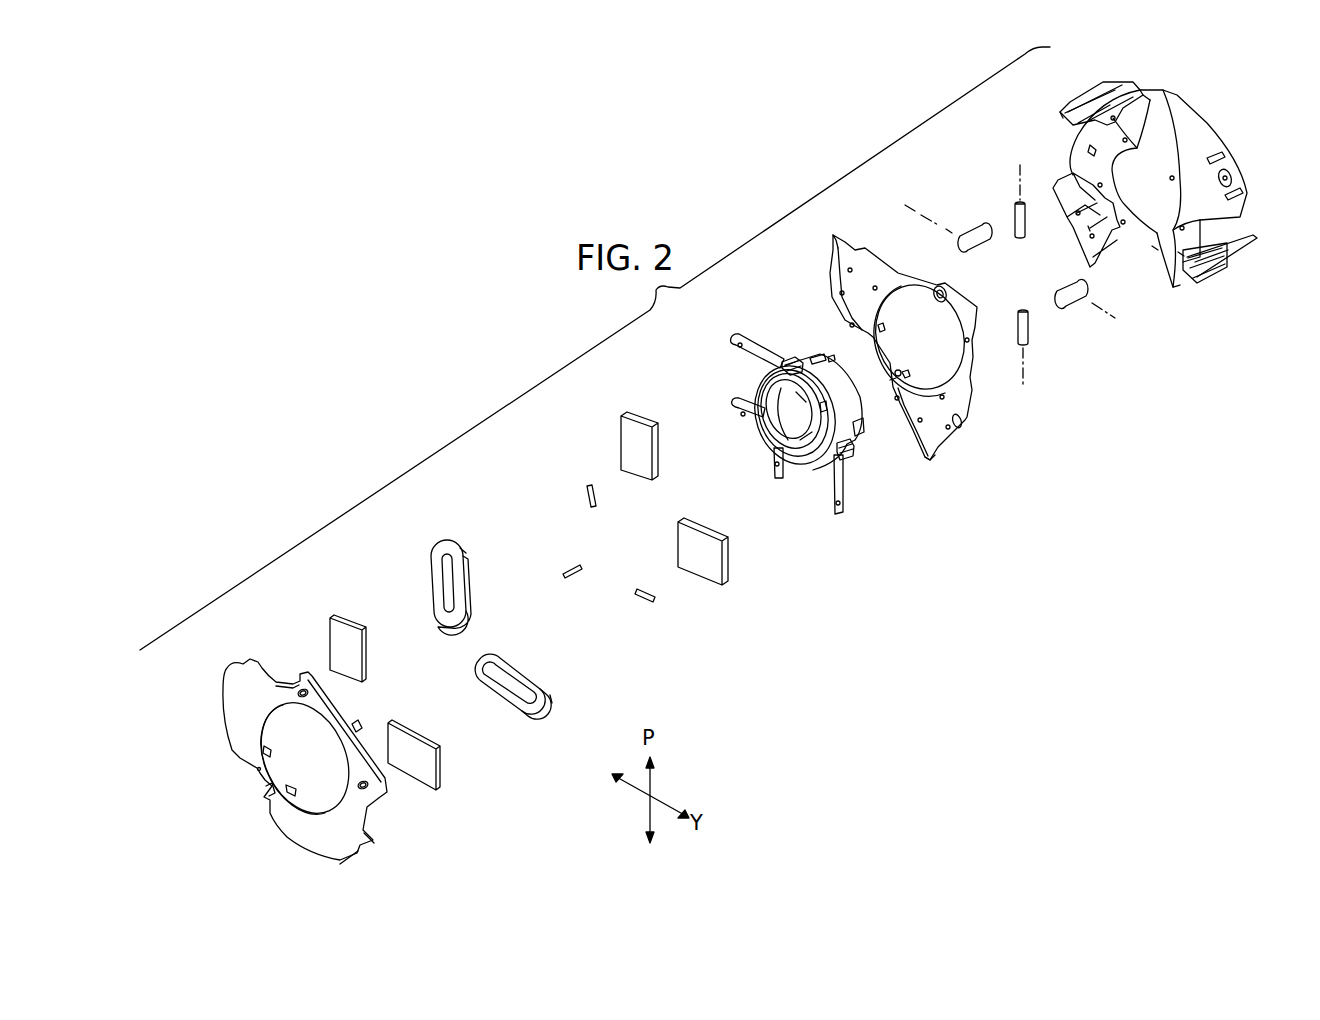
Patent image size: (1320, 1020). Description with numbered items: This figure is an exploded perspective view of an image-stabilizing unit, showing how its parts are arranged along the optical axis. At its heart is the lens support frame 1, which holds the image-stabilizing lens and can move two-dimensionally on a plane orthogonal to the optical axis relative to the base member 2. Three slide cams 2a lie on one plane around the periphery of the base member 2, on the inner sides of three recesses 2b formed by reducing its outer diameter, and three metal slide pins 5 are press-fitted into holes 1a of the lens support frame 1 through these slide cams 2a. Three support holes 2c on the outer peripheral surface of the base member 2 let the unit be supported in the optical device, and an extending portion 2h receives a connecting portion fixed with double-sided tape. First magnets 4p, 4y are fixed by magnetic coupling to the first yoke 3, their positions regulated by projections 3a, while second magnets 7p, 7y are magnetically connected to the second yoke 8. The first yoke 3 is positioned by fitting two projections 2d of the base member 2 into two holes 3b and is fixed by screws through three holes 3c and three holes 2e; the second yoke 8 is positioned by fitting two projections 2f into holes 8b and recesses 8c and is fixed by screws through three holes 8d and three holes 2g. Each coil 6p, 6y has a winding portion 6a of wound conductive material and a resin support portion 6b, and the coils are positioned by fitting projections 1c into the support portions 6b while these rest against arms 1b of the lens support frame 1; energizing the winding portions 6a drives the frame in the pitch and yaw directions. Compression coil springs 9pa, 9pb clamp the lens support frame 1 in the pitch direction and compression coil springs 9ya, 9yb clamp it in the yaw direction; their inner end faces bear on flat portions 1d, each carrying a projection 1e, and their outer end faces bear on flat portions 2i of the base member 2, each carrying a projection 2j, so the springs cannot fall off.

The lens support frame 1 is at (867, 455).
The holes 1a is at (787, 357).
The arms 1b is at (760, 367).
The projections 1c is at (736, 344).
The flat portions 1d is at (830, 357).
The projection 1e is at (814, 353).
The base member 2 is at (1187, 280).
The slide cams 2a is at (1125, 86).
The recesses 2b is at (1145, 85).
The support holes 2c is at (1230, 177).
The projections 2d is at (1124, 226).
The holes 2e is at (1103, 186).
The projections 2f is at (1210, 150).
The holes 2g is at (1146, 130).
The extending portion 2h is at (1248, 240).
The flat portions 2i is at (1090, 147).
The projection 2j is at (1063, 117).
The first yoke 3 is at (970, 418).
The projections 3a is at (832, 242).
The holes 3b is at (968, 337).
The holes 3c is at (947, 292).
The first magnet 4y is at (627, 430).
The first magnet 4p is at (728, 566).
The slide pins 5 is at (587, 492).
The coil 6y is at (443, 540).
The coil 6p is at (545, 715).
The winding portion 6a is at (435, 555).
The support portion 6b is at (456, 543).
The second magnet 7y is at (332, 637).
The second magnet 7p is at (438, 767).
The second yoke 8 is at (242, 667).
The holes 8b is at (257, 770).
The recesses 8c is at (357, 727).
The holes 8d is at (303, 676).
The compression coil spring 9ya is at (1067, 303).
The compression coil spring 9yb is at (977, 237).
The compression coil spring 9pa is at (1030, 333).
The compression coil spring 9pb is at (1016, 218).